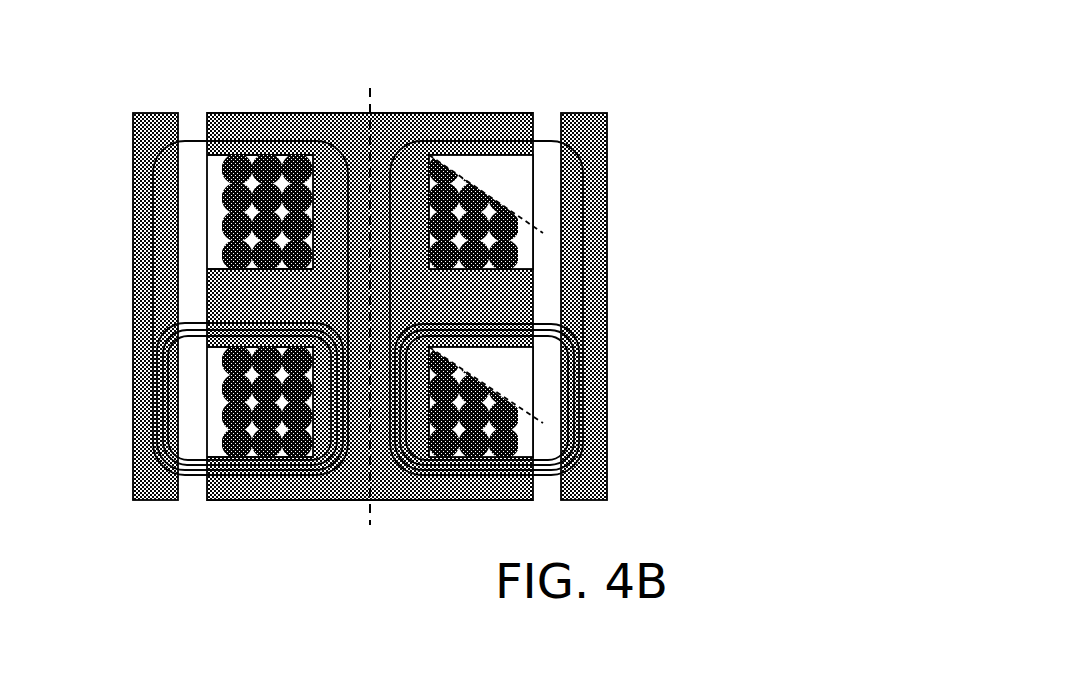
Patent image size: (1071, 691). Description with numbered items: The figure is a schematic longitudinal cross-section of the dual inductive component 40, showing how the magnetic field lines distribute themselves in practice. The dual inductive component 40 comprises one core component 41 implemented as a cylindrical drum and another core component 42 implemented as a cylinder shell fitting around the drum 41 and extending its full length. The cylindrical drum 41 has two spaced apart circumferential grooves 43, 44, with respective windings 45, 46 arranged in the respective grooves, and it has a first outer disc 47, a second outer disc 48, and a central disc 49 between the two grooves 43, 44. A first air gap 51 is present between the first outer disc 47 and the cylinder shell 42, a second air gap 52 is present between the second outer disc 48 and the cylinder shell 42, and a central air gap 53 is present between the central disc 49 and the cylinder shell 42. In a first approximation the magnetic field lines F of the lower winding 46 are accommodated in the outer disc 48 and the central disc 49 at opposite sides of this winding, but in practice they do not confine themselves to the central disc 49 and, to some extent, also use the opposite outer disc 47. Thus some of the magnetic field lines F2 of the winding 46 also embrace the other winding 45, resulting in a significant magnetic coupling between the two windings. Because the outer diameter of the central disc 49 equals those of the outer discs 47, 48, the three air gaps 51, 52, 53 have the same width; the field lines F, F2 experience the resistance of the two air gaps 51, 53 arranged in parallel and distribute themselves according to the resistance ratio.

The dual inductive component 40 is at (722, 57).
The core component (cylindrical drum) 41 is at (271, 507).
The core component (cylinder shell) 42 is at (146, 507).
The first circumferential groove 43 is at (511, 183).
The second circumferential groove 44 is at (511, 372).
The first winding 45 is at (511, 252).
The second winding 46 is at (511, 413).
The first outer disc 47 is at (511, 128).
The second outer disc 48 is at (501, 483).
The central disc 49 is at (259, 307).
The first air gap 51 is at (190, 130).
The second air gap 52 is at (193, 473).
The central air gap 53 is at (190, 296).
The magnetic field lines F is at (142, 416).
The magnetic field lines (coupling field lines) F2 is at (142, 186).